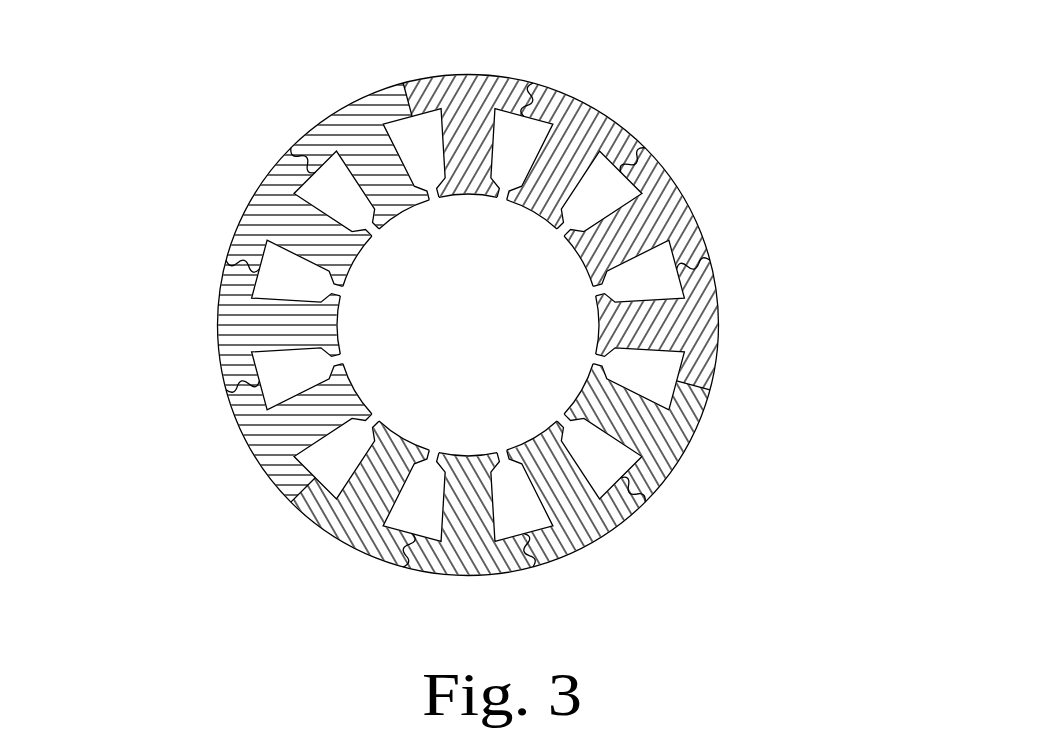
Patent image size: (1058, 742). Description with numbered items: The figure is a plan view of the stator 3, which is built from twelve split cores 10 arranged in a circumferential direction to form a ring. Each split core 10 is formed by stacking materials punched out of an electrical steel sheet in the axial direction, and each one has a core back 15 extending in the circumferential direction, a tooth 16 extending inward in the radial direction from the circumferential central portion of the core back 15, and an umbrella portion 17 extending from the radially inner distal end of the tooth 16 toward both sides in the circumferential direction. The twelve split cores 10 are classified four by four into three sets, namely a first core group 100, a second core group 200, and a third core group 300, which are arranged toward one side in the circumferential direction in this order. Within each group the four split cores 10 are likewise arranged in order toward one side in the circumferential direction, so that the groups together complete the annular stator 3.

The stator 3 is at (883, 110).
The split core 10 is at (462, 323).
The core back 15 is at (243, 250).
The tooth 16 is at (317, 233).
The umbrella portion 17 is at (337, 277).
The first core group 100 is at (641, 217).
The second core group 200 is at (496, 463).
The third core group 300 is at (256, 277).